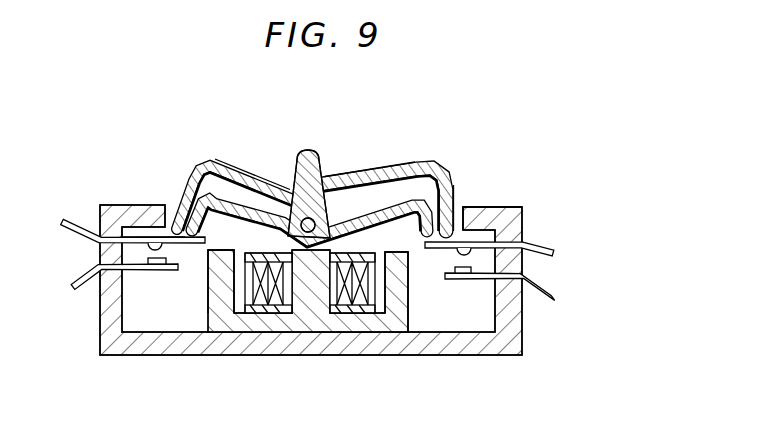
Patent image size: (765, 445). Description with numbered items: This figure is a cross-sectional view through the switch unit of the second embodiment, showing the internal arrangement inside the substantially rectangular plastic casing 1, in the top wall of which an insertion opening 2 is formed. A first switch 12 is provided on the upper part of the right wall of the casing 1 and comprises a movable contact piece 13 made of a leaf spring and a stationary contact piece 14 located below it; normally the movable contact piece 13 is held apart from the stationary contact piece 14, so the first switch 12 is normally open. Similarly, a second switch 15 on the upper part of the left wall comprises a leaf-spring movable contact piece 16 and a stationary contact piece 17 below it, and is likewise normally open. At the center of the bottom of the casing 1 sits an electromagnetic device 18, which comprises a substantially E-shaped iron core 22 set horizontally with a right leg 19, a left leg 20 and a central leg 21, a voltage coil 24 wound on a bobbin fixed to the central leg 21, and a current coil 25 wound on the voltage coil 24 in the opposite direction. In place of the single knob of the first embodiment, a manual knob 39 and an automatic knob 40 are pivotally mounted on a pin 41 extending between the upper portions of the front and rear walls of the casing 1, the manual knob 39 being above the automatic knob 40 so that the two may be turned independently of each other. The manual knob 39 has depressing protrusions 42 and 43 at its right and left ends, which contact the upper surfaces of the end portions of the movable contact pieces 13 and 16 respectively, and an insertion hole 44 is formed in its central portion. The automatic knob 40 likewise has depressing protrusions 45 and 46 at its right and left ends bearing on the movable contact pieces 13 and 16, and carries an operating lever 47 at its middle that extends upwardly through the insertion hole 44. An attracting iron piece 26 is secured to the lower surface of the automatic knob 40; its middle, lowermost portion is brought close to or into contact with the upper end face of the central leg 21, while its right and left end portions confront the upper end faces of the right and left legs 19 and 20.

The casing 1 is at (522, 340).
The insertion opening 2 is at (463, 217).
The first switch 12 is at (446, 254).
The movable contact piece 13 is at (496, 238).
The stationary contact piece 14 is at (480, 280).
The second switch 15 is at (176, 248).
The movable contact piece 16 is at (122, 232).
The stationary contact piece 17 is at (140, 272).
The electromagnetic device 18 is at (203, 315).
The right leg 19 is at (410, 318).
The left leg 20 is at (220, 175).
The central leg 21 is at (280, 215).
The iron core 22 is at (250, 322).
The voltage coil 24 is at (334, 308).
The current coil 25 is at (360, 310).
The iron piece 26 is at (390, 180).
The manual knob 39 is at (358, 186).
The automatic knob 40 is at (432, 180).
The pin 41 is at (328, 207).
The depressing protrusion 42 is at (455, 228).
The depressing protrusion 43 is at (123, 233).
The insertion hole 44 is at (273, 178).
The depressing protrusion 45 is at (422, 235).
The depressing protrusion 46 is at (178, 205).
The operating lever 47 is at (308, 165).